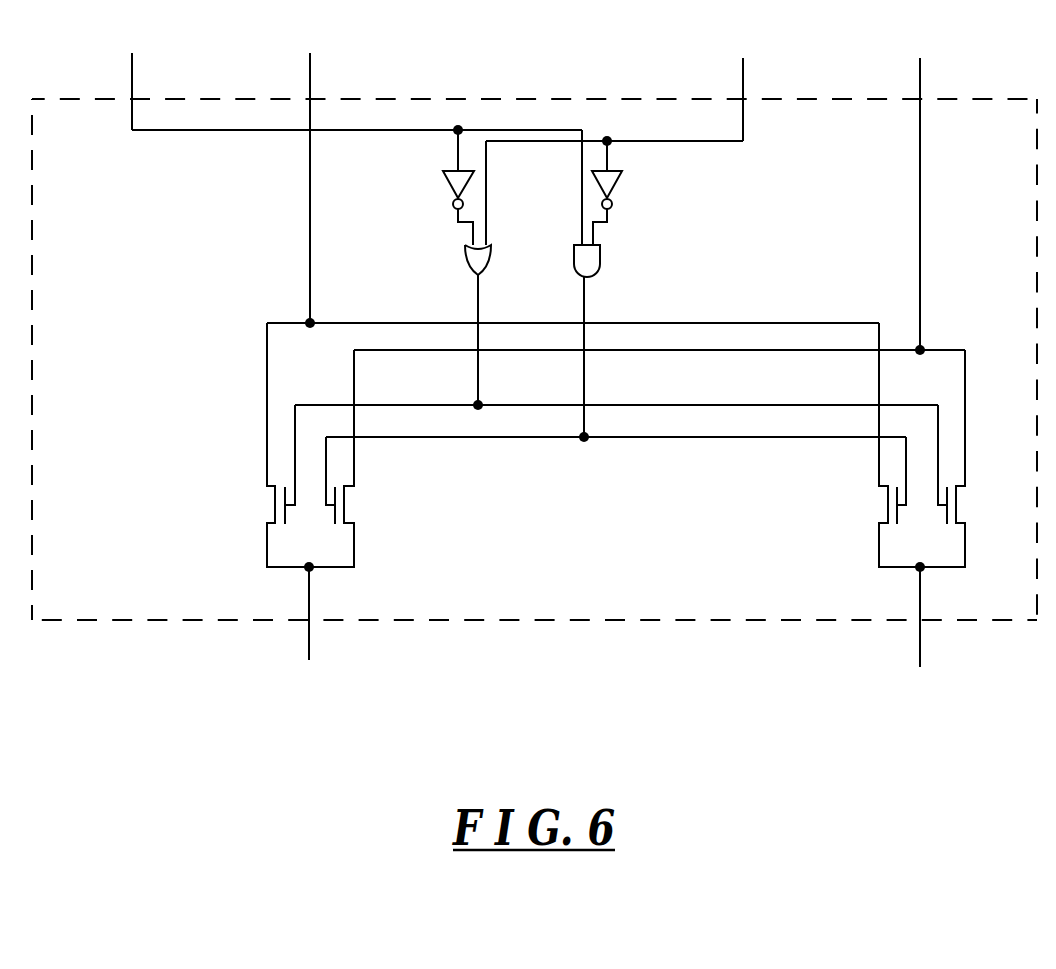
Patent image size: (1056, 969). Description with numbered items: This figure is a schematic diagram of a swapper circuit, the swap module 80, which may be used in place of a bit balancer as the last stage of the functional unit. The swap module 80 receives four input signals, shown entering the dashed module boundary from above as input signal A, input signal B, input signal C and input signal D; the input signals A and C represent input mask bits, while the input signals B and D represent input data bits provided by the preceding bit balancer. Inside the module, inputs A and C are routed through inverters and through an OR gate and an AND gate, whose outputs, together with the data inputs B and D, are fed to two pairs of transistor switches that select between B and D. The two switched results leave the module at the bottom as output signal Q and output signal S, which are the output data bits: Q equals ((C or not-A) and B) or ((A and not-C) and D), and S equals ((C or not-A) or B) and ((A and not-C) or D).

The swap module 80 is at (535, 445).
The input signal A is at (132, 77).
The input signal B is at (310, 174).
The input signal C is at (743, 85).
The input signal D is at (920, 189).
The output signal Q is at (309, 630).
The output signal S is at (920, 632).